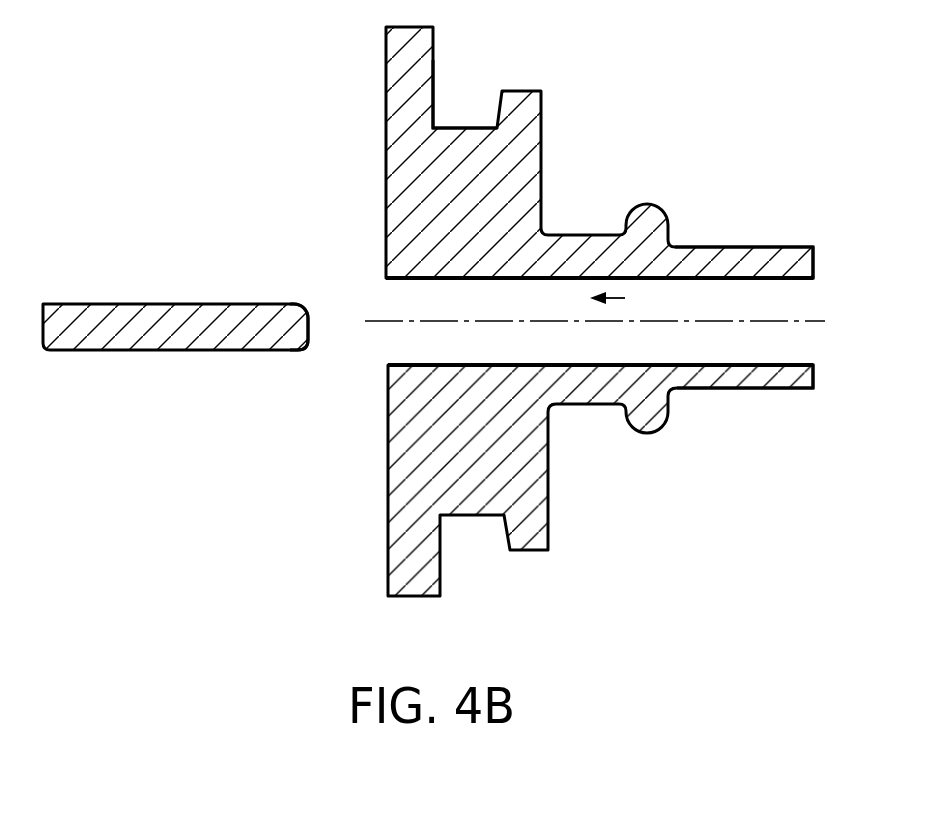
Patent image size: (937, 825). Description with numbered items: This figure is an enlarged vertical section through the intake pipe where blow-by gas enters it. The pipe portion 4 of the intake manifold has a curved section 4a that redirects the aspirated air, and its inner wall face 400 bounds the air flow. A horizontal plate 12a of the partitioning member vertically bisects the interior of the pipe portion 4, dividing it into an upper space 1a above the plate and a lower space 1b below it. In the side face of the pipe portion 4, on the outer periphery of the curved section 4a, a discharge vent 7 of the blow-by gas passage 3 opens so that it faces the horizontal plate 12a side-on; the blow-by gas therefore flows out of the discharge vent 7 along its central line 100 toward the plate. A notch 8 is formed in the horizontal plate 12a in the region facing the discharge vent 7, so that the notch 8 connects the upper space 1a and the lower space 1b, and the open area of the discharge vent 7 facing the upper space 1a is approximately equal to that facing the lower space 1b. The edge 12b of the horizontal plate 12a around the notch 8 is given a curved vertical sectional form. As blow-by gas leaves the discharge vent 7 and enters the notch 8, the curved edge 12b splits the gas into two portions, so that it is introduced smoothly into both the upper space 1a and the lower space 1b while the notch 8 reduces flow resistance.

The upper space 1a is at (234, 208).
The lower space 1b is at (240, 494).
The blow-by gas passage 3 is at (750, 258).
The pipe portion 4 is at (434, 47).
The curved section 4a is at (423, 77).
The discharge vent 7 is at (389, 334).
The notch 8 is at (342, 327).
The horizontal plate 12a is at (100, 333).
The edge of the horizontal plate 12b is at (309, 328).
The central line of the discharge vent 100 is at (678, 355).
The inner wall face of the pipe portion 400 is at (389, 494).